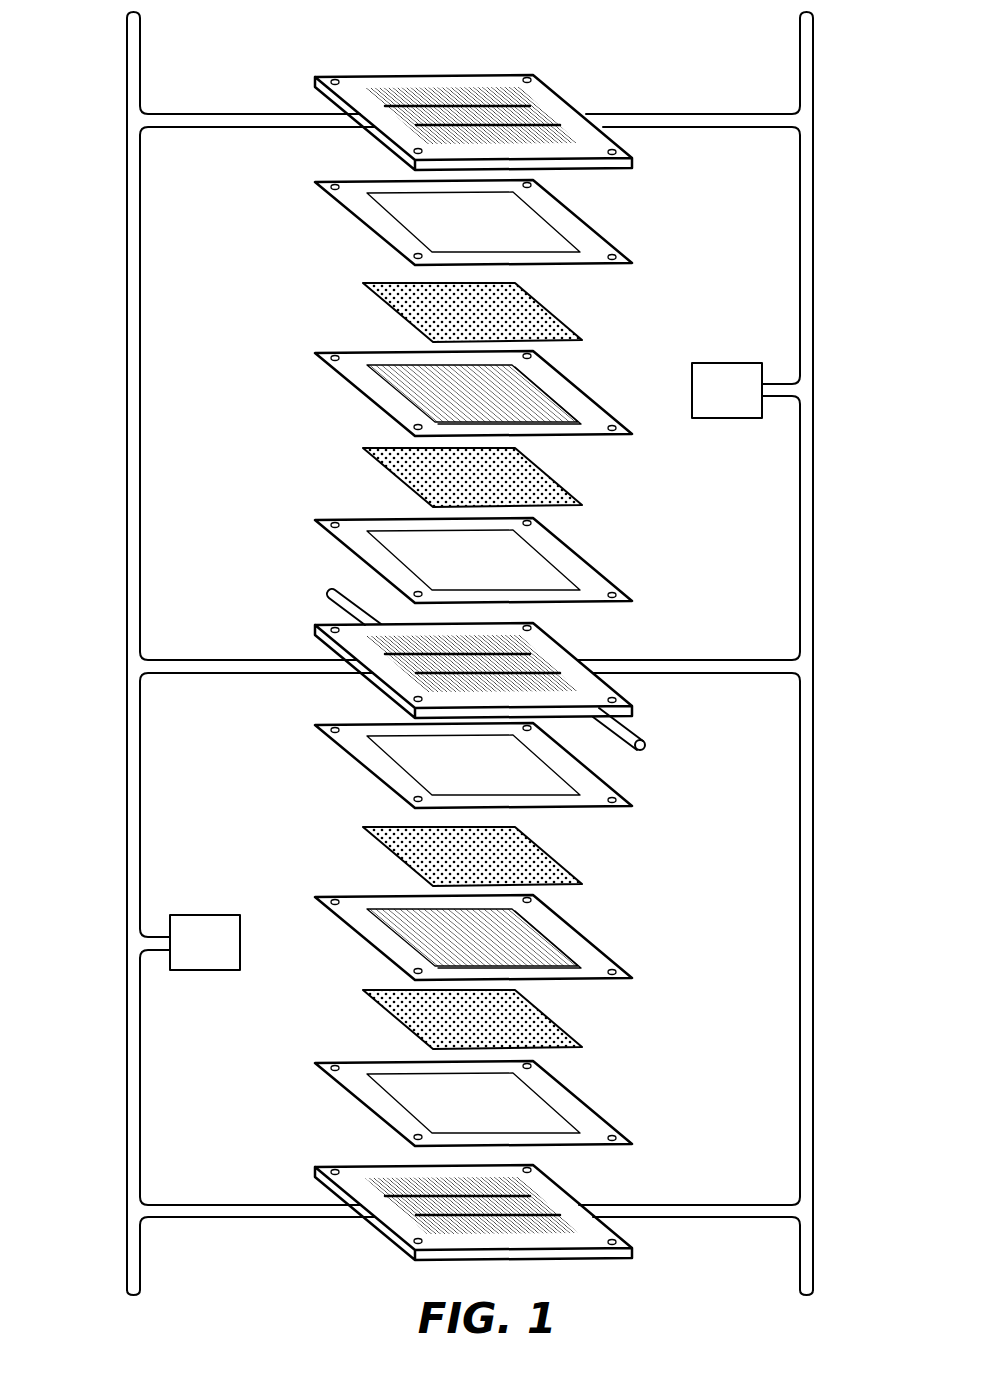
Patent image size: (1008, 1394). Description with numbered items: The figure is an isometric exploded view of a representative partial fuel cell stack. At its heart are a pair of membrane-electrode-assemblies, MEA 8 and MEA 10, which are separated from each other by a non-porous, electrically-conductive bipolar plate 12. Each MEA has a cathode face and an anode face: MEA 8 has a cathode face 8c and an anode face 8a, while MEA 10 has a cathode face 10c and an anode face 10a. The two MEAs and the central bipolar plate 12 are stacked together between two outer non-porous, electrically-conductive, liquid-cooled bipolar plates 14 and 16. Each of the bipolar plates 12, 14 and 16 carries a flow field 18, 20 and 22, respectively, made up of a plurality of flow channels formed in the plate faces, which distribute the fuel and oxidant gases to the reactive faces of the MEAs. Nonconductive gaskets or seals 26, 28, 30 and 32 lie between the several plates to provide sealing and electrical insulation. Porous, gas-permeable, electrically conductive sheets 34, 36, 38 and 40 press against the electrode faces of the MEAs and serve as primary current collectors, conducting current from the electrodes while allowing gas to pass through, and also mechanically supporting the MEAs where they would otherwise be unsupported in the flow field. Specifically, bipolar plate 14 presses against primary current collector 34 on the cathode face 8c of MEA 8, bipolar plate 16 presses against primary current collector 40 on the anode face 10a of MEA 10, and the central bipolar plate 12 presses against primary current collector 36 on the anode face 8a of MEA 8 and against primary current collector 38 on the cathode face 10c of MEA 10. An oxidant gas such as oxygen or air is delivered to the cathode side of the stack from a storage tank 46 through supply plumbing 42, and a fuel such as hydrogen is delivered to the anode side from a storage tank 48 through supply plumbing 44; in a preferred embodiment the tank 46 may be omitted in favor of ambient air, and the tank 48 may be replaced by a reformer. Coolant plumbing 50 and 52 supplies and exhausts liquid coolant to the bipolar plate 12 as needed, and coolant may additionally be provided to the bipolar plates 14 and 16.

The membrane-electrode-assembly 8 is at (437, 416).
The anode face 8a is at (558, 425).
The cathode face 8c is at (540, 394).
The membrane-electrode-assembly 10 is at (493, 909).
The anode face 10a is at (397, 942).
The cathode face 10c is at (394, 912).
The bipolar plate 12 is at (406, 668).
The bipolar plate 14 is at (418, 97).
The bipolar plate 16 is at (490, 1219).
The flow field 18 is at (526, 658).
The flow field 20 is at (543, 110).
The flow field 22 is at (410, 1216).
The gasket 26 is at (386, 226).
The gasket 28 is at (360, 545).
The gasket 30 is at (593, 792).
The gasket 32 is at (570, 1113).
The primary current collector 34 is at (386, 300).
The primary current collector 36 is at (384, 470).
The primary current collector 38 is at (552, 866).
The primary current collector 40 is at (543, 1027).
The supply plumbing 42 is at (807, 513).
The supply plumbing 44 is at (130, 1083).
The storage tank 46 is at (724, 367).
The storage tank 48 is at (212, 915).
The coolant plumbing 50 is at (328, 596).
The coolant plumbing 52 is at (633, 729).